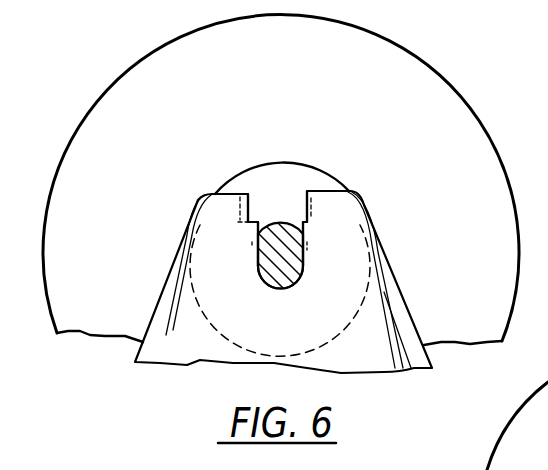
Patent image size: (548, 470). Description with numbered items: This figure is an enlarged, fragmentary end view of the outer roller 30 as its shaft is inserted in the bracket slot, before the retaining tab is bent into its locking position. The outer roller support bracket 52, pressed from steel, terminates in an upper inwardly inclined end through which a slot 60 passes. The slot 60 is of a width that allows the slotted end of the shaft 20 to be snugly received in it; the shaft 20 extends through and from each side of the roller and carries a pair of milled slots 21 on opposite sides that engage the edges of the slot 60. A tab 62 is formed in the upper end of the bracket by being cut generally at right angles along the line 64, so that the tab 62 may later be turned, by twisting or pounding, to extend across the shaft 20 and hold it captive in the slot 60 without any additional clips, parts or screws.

The outer roller 30 is at (404, 47).
The outer roller support bracket 52 is at (381, 278).
The slot 60 is at (308, 196).
The tab 62 is at (248, 195).
The line 64 is at (247, 223).
The shaft 20 is at (284, 272).
The milled slots 21 is at (256, 262).